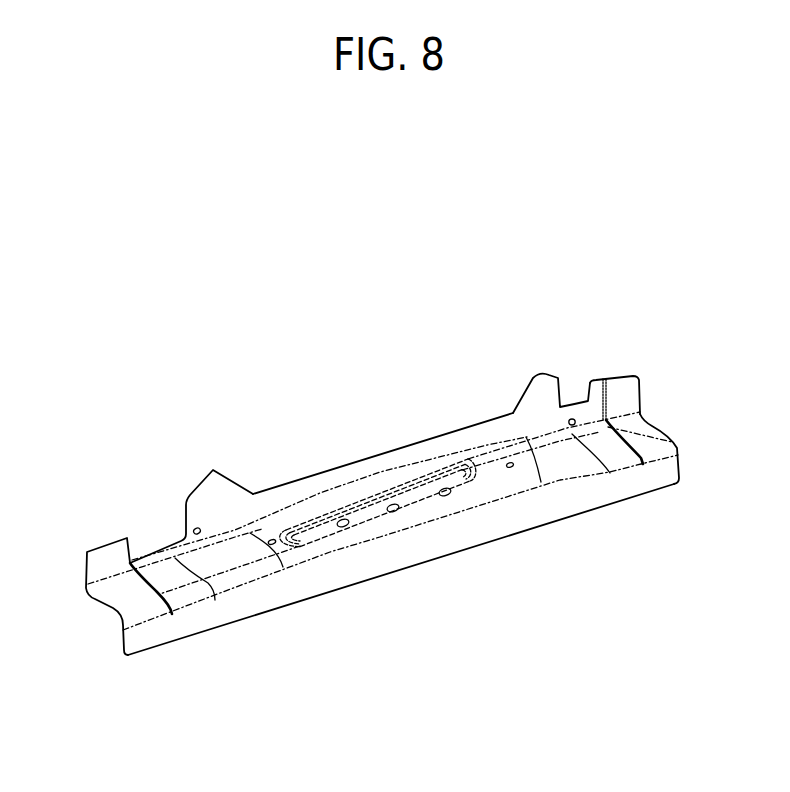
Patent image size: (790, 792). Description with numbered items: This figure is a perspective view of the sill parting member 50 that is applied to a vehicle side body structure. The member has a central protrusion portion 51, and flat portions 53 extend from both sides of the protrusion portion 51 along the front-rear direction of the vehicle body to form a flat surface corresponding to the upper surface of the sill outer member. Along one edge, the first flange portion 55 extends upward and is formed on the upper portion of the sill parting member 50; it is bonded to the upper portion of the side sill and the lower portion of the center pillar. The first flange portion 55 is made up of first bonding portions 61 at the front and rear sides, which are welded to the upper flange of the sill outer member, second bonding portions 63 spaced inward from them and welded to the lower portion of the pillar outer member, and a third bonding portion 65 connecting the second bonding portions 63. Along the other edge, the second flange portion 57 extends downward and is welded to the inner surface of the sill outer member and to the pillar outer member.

The sill parting member 50 is at (268, 290).
The protrusion portion 51 is at (482, 452).
The flat portion 53 is at (125, 598).
The first flange portion 55 is at (364, 461).
The second flange portion 57 is at (207, 617).
The first bonding portion 61 is at (108, 553).
The second bonding portion 63 is at (207, 498).
The third bonding portion 65 is at (288, 497).